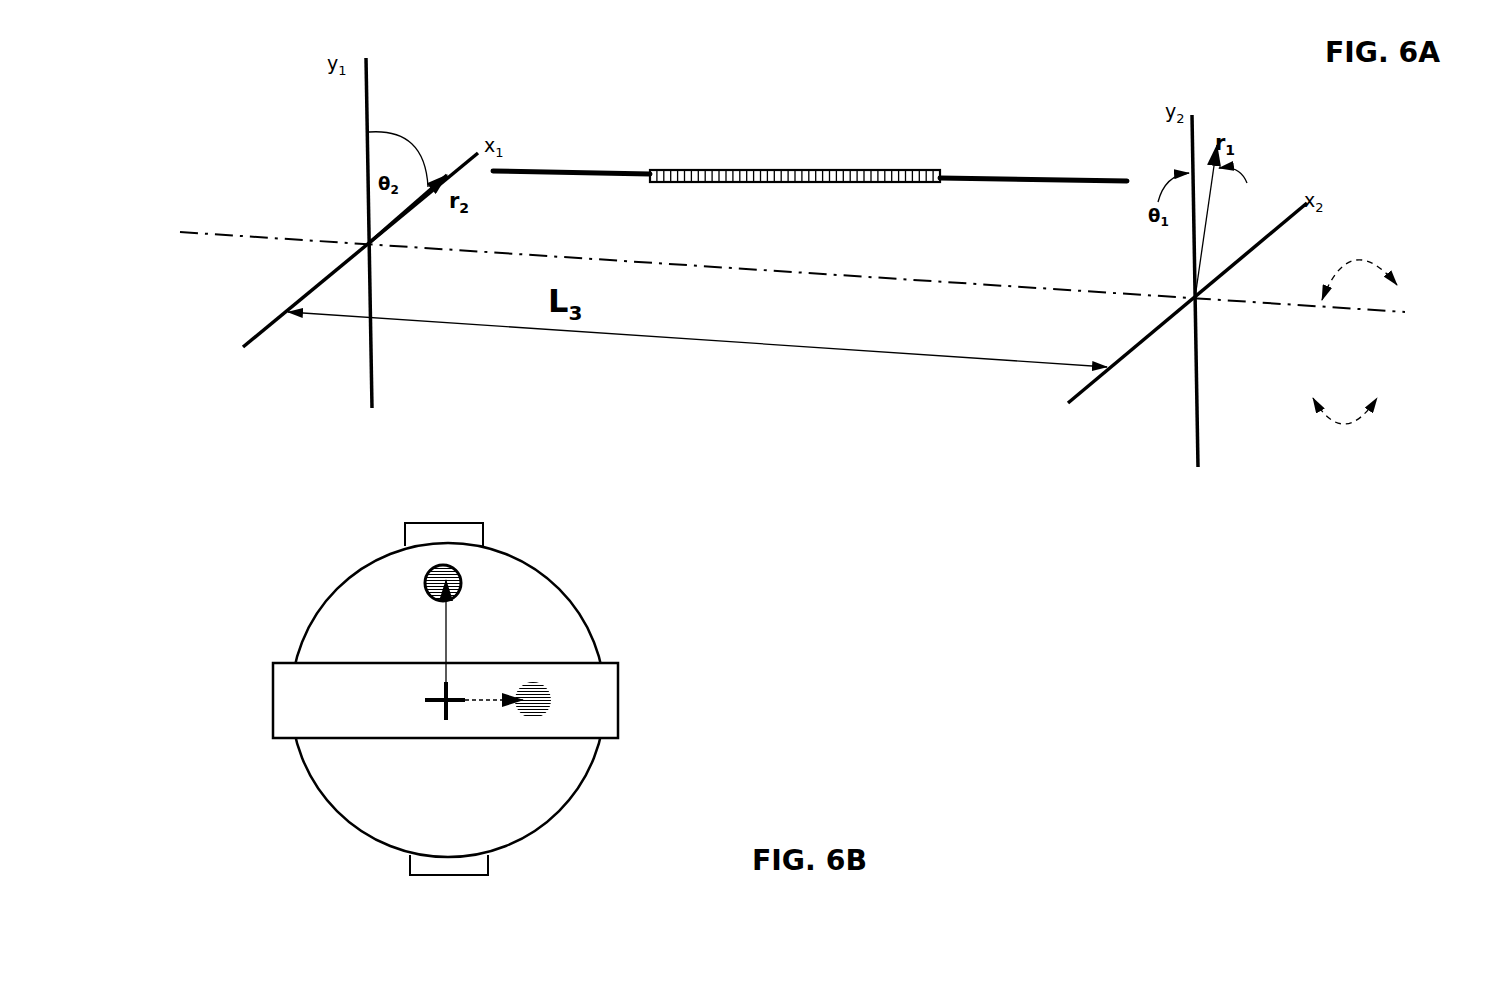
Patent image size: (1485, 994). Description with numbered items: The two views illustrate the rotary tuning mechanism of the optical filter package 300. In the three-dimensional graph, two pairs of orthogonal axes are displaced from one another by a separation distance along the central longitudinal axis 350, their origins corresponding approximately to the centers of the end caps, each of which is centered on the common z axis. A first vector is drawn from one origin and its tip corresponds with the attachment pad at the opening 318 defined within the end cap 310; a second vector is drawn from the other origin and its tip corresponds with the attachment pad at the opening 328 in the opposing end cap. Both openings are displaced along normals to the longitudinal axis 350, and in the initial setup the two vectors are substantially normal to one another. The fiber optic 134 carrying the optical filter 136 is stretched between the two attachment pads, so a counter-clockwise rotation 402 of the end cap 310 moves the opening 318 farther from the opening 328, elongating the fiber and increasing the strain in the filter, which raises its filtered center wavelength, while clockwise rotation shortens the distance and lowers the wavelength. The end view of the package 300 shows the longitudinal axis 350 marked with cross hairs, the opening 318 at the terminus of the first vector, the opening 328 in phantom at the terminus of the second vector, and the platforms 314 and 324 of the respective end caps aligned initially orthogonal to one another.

In FIG. 6A, the fiber optic 134 is at (1013, 176).
In FIG. 6A, the optical filter 136 is at (850, 172).
In FIG. 6B, the optical filter package 300 is at (386, 484).
In FIG. 6B, the end cap 310 is at (552, 575).
In FIG. 6B, the platform 314 is at (618, 690).
In FIG. 6B, the opening 318 is at (450, 575).
In FIG. 6B, the platform 324 is at (477, 523).
In FIG. 6B, the opening 328 is at (540, 709).
In FIG. 6A, the longitudinal axis 350 is at (877, 270).
In FIG. 6B, the longitudinal axis 350 is at (440, 698).
In FIG. 6A, the rotation 402 is at (1387, 244).